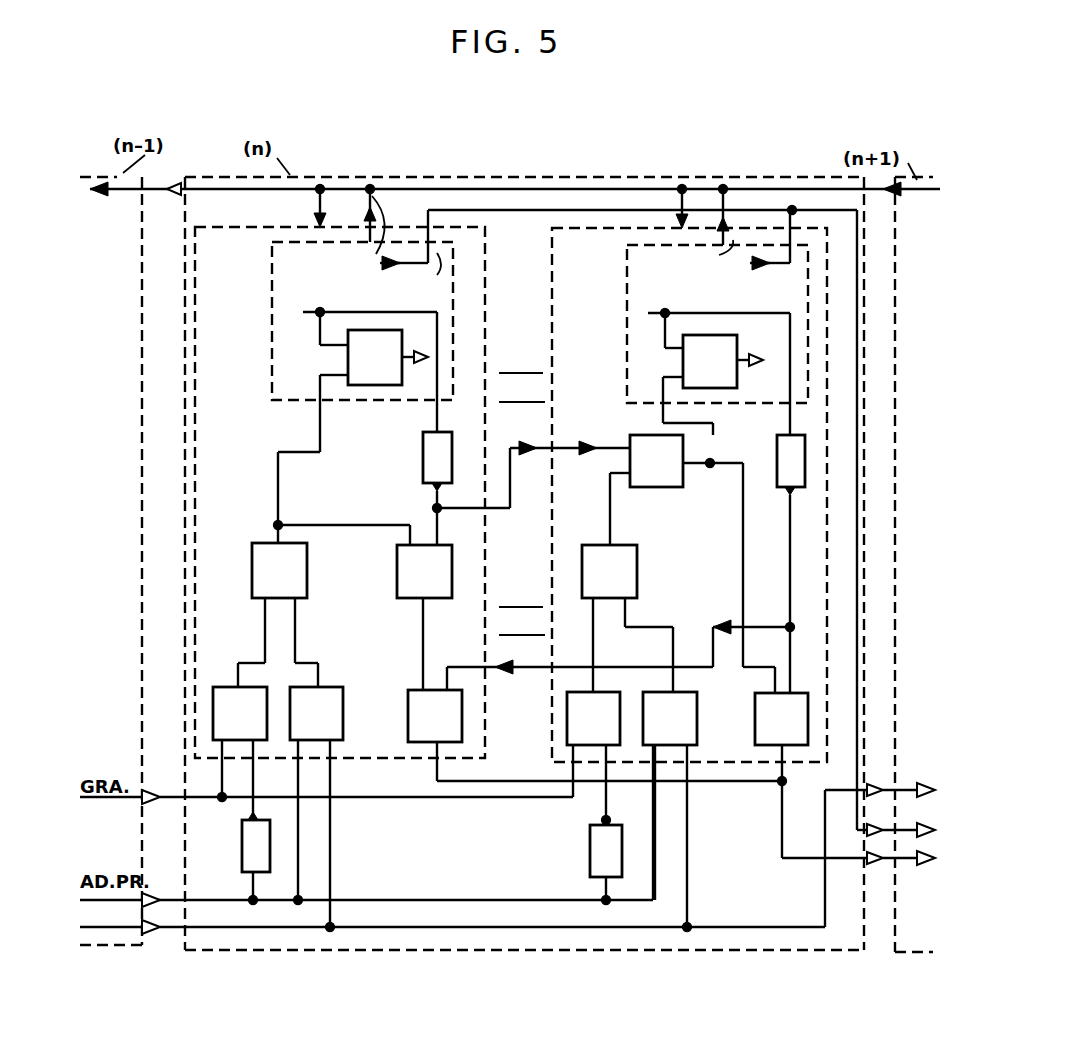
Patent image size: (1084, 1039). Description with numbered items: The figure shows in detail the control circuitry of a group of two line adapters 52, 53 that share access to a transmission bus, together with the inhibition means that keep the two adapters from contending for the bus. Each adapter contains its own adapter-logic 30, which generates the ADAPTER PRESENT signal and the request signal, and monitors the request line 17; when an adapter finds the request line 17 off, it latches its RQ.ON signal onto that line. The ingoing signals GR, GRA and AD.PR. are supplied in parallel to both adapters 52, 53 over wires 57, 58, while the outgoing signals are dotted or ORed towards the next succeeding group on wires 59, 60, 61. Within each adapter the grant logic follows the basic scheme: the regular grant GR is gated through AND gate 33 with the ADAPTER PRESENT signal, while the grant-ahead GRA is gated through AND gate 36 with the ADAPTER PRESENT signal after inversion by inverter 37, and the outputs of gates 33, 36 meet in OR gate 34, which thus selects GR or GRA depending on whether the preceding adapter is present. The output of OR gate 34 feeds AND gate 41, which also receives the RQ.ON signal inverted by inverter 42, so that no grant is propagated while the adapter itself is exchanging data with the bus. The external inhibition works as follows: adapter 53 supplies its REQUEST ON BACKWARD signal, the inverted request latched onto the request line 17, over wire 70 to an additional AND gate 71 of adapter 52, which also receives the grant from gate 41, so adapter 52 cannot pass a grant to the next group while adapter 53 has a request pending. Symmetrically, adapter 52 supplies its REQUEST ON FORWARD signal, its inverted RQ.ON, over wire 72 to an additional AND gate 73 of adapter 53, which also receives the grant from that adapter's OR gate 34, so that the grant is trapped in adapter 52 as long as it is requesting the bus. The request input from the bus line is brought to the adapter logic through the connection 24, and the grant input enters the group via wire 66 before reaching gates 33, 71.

The request line 17 is at (605, 188).
The request-on input line 24 is at (320, 184).
The adapter-logic 30 is at (270, 312).
The AND gate 33 is at (357, 679).
The OR gate 34 is at (267, 541).
The AND gate 36 is at (233, 690).
The inverter 37 is at (240, 855).
The AND gate 41 is at (397, 573).
The inverter 42 is at (422, 452).
The adapter 52 is at (250, 226).
The adapter 53 is at (550, 290).
The wire 57 is at (425, 795).
The wire 58 is at (747, 209).
The wire 59 is at (903, 863).
The wire 60 is at (825, 838).
The wire 61 is at (853, 760).
The grant input line 66 is at (553, 925).
The wire 70 is at (533, 670).
The additional AND gate 71 is at (408, 710).
The wire 72 is at (561, 447).
The additional AND gate 73 is at (660, 432).